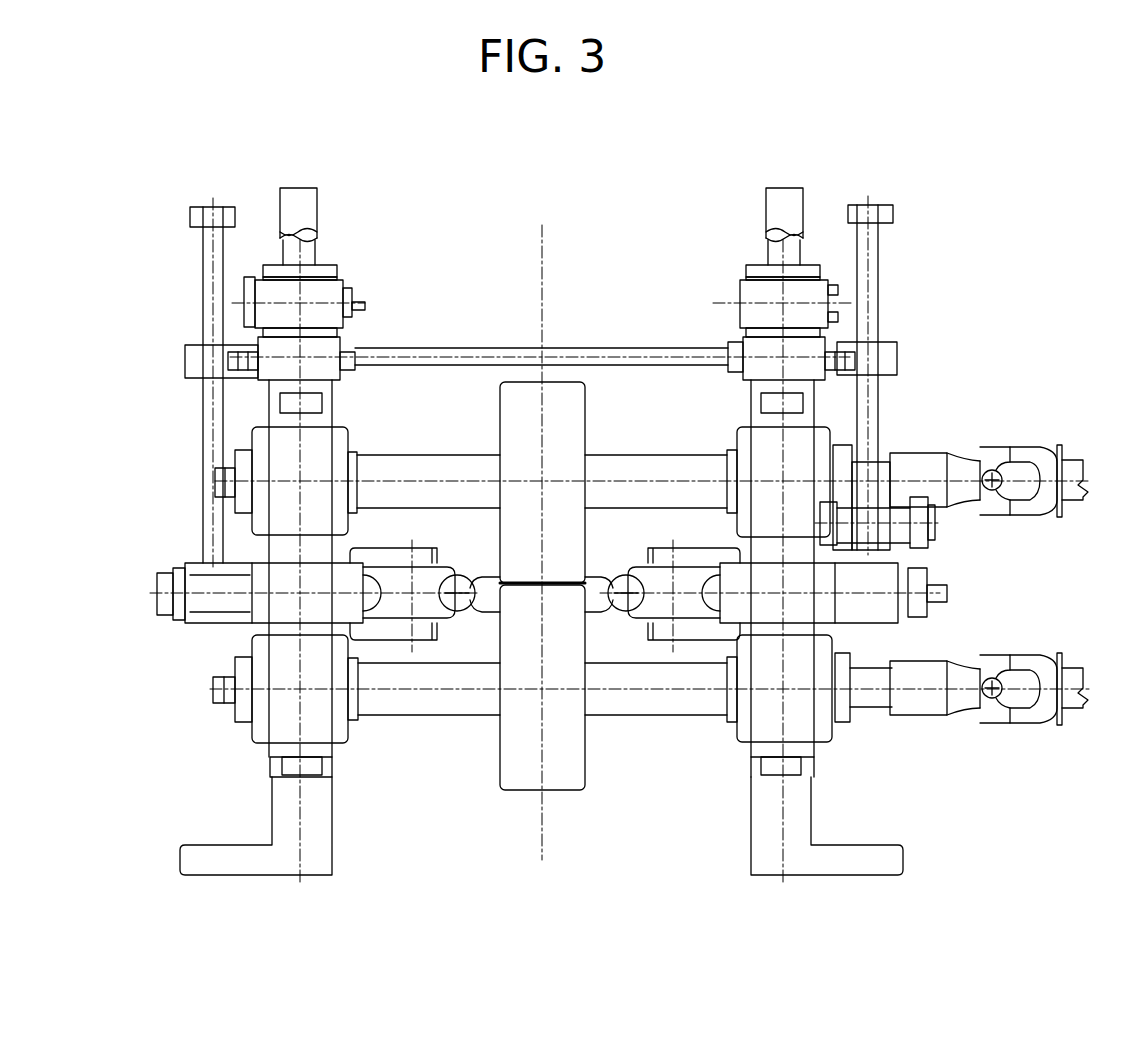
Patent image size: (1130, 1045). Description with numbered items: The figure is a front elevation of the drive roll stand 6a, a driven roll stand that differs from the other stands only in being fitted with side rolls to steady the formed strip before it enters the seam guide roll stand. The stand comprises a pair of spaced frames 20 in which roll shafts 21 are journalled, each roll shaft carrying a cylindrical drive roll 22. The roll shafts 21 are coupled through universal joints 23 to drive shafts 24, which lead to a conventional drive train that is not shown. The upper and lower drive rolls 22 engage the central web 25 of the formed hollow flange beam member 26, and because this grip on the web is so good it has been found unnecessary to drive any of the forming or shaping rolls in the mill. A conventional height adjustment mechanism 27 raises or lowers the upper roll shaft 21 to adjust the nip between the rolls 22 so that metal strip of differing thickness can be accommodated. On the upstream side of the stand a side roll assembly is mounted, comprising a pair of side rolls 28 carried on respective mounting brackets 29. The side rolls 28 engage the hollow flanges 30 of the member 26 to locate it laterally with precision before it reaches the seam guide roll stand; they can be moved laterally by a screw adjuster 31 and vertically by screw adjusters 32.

The drive roll stand 6a is at (1008, 197).
The spaced frames 20 is at (800, 290).
The roll shafts 21 is at (420, 470).
The cylindrical drive roll 22 is at (581, 437).
The universal joints 23 is at (1005, 455).
The drive shafts 24 is at (1068, 460).
The central web 25 is at (488, 627).
The hollow flange beam member 26 is at (607, 580).
The height adjustment mechanism 27 is at (290, 295).
The side rolls 28 is at (447, 620).
The mounting brackets 29 is at (285, 610).
The hollow flanges 30 is at (478, 577).
The screw adjuster 31 is at (157, 575).
The screw adjusters 32 is at (195, 220).